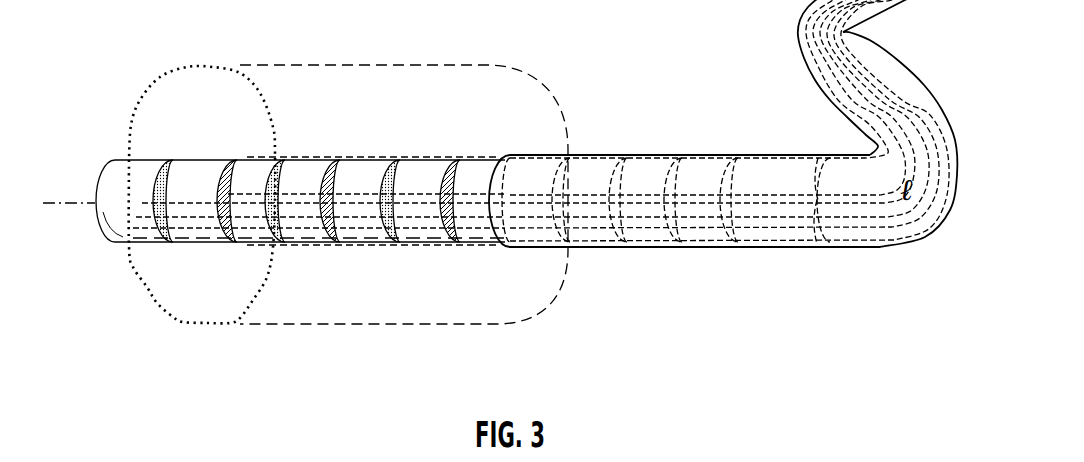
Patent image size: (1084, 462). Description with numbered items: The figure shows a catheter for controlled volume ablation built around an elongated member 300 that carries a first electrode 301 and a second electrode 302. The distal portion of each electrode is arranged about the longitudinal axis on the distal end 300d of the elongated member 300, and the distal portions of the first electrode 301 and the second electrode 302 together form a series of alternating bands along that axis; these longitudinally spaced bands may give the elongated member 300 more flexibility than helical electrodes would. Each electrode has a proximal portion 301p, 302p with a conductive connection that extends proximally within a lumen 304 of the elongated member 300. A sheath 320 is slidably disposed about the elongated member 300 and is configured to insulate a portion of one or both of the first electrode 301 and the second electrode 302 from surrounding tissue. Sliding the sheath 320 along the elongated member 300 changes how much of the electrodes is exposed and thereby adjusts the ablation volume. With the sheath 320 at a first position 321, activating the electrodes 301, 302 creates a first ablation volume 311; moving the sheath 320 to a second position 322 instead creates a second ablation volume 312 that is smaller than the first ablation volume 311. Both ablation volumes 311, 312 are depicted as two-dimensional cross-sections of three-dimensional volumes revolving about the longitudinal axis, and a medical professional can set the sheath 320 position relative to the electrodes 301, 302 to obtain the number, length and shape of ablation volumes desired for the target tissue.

The elongated member 300 is at (362, 190).
The distal end 300d is at (118, 188).
The first electrode 301 is at (168, 158).
The second electrode 302 is at (230, 158).
The sheath 320 is at (637, 155).
The first position 321 is at (500, 245).
The second position 322 is at (247, 245).
The first ablation volume 311 is at (345, 327).
The second ablation volume 312 is at (177, 318).
The proximal portion 302p is at (830, 180).
The lumen 304 is at (773, 183).
The proximal portion 301p is at (817, 245).